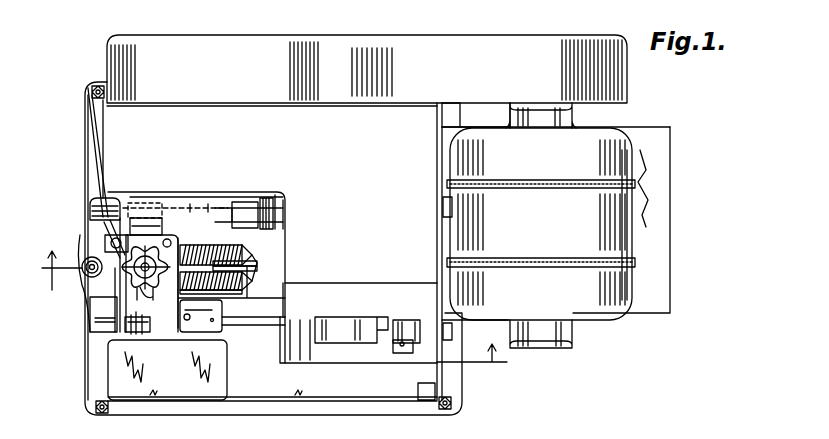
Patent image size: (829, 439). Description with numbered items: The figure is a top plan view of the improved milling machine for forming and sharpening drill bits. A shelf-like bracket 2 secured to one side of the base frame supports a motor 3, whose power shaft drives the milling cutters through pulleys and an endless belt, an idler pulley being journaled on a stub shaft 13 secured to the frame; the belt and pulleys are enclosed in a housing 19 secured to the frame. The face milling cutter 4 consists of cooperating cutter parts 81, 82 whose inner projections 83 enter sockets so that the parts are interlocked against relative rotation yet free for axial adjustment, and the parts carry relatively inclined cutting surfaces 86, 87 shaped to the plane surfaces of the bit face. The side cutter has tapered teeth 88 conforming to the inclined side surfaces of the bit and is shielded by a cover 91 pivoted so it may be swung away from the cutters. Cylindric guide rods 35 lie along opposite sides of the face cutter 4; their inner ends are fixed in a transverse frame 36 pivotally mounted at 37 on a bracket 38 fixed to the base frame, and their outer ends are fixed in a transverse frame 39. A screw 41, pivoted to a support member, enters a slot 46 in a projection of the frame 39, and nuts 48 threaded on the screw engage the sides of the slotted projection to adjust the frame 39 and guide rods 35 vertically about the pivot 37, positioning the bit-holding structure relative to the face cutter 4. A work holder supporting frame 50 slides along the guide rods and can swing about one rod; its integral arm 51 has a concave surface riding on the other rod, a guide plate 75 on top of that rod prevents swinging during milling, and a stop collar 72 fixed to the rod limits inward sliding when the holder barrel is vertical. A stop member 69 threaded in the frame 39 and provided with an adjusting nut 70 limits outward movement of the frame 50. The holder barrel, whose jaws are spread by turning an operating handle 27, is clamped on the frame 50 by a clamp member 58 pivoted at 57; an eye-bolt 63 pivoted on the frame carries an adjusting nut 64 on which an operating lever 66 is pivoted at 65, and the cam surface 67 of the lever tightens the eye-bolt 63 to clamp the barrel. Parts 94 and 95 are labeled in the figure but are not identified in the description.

The housing 19 is at (440, 45).
The cover 91 is at (417, 120).
The shelf-like bracket 2 is at (668, 313).
The motor 3 is at (588, 305).
The stub shaft 13 is at (271, 329).
The pivot 65 is at (100, 187).
The cam surface 67 is at (100, 213).
The operating lever 66 is at (93, 222).
The screw 41 is at (88, 228).
The nuts 48 is at (82, 256).
The slot 46 is at (90, 315).
The transverse frame 39 is at (77, 328).
The clamp member 58 is at (115, 217).
The eye-bolt 63 is at (150, 217).
The hidden member 95 is at (147, 200).
The arm 51 is at (158, 232).
The operating handle 27 is at (177, 217).
The guide plate 75 is at (207, 200).
The tapered teeth 88 is at (230, 220).
The cutter part 81 is at (264, 198).
The stop collar 72 is at (265, 200).
The guide rods 35 is at (287, 195).
The adjusting nut 64 is at (283, 222).
The face milling cutter 4 is at (245, 250).
The cutting surface 86 is at (250, 260).
The cutting surface 87 is at (255, 267).
The projections 83 is at (247, 269).
The cutter part 82 is at (223, 293).
The bracket block 94 is at (213, 323).
The adjusting nut 70 is at (127, 333).
The pivot 57 is at (130, 323).
The stop member 69 is at (133, 327).
The work holder supporting frame 50 is at (207, 340).
The transverse frame 36 is at (392, 318).
The bracket 38 is at (433, 318).
The pivot 37 is at (393, 353).